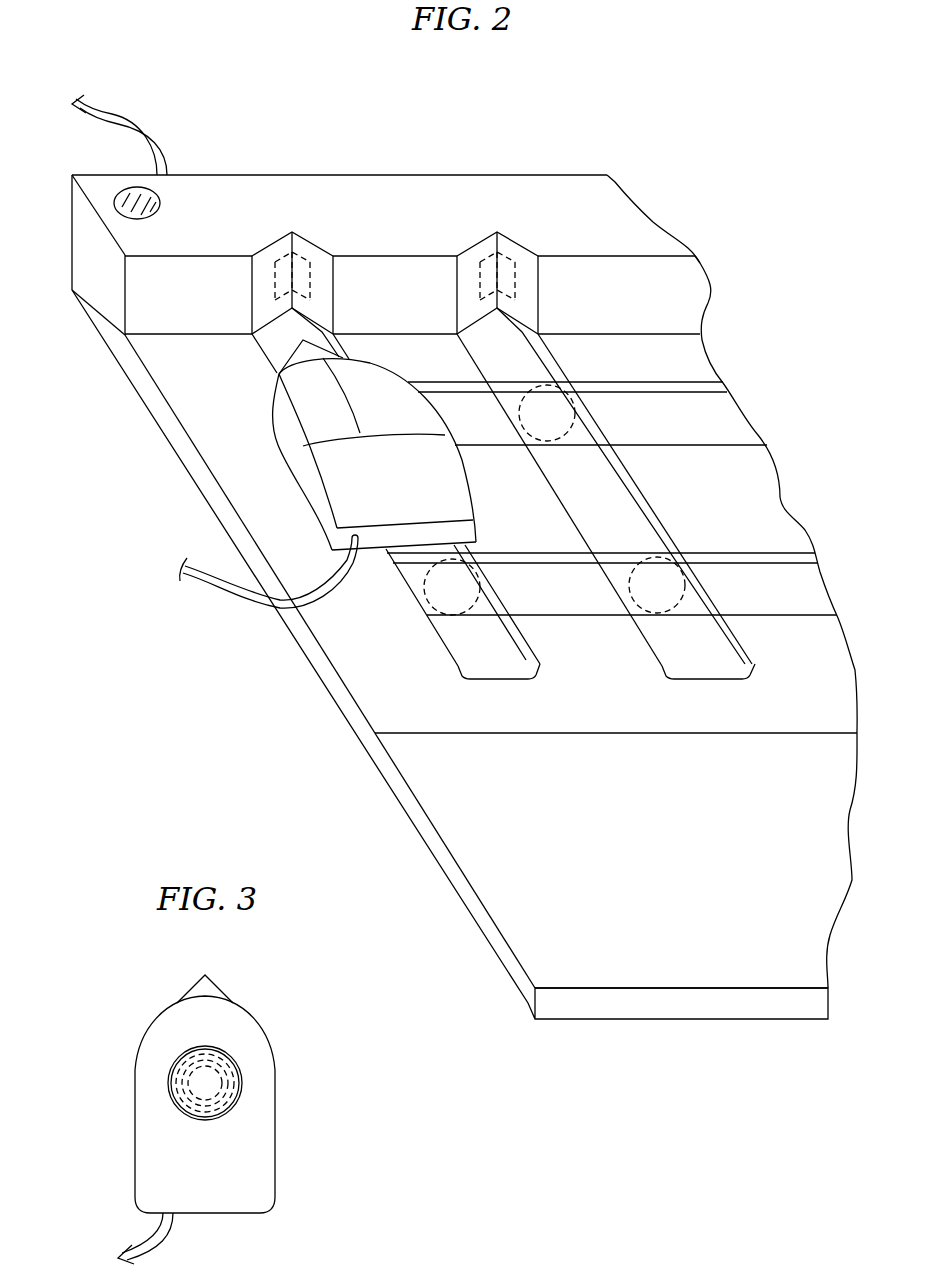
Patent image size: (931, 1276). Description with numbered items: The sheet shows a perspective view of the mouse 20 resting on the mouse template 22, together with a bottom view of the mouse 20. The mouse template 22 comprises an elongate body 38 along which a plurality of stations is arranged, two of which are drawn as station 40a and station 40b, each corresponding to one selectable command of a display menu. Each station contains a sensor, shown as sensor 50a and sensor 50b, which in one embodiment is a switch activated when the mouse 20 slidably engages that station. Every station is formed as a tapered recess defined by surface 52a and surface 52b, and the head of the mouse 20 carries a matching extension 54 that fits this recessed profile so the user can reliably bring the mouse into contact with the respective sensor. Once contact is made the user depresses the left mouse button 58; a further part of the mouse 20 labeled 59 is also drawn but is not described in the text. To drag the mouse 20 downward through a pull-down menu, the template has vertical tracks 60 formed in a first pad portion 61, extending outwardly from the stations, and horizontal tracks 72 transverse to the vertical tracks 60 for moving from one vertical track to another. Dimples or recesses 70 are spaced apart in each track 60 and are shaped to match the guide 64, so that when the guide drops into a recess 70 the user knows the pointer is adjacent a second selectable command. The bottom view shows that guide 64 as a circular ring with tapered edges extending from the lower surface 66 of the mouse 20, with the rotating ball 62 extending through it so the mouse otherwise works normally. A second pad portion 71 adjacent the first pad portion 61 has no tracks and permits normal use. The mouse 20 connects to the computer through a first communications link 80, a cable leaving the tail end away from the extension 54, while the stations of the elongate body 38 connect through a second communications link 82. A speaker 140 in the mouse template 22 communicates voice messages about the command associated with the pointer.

In FIG. 2, the mouse 20 is at (310, 488).
In FIG. 3, the mouse 20 is at (93, 1035).
In FIG. 2, the mouse template 22 is at (626, 165).
In FIG. 2, the elongate body 38 is at (83, 228).
In FIG. 2, the station 40a is at (292, 225).
In FIG. 2, the station 40b is at (497, 225).
In FIG. 2, the sensor 50a is at (302, 262).
In FIG. 2, the sensor 50b is at (507, 266).
In FIG. 2, the surface 52a is at (265, 275).
In FIG. 2, the surface 52b is at (322, 275).
In FIG. 2, the extension 54 is at (283, 346).
In FIG. 3, the extension 54 is at (198, 986).
In FIG. 2, the left mouse button 58 is at (302, 400).
In FIG. 2, the shoulder of cartridge 59 is at (378, 410).
In FIG. 2, the track 60 is at (500, 662).
In FIG. 2, the first pad portion 61 is at (692, 360).
In FIG. 3, the rotating ball 62 is at (230, 1087).
In FIG. 3, the guide 64 is at (227, 1047).
In FIG. 3, the lower surface 66 is at (255, 1178).
In FIG. 2, the recess 70 is at (418, 592).
In FIG. 2, the second pad portion 71 is at (495, 837).
In FIG. 2, the horizontal track 72 is at (732, 418).
In FIG. 2, the first communications link 80 is at (213, 590).
In FIG. 2, the second communications link 82 is at (118, 121).
In FIG. 2, the speaker 140 is at (122, 193).